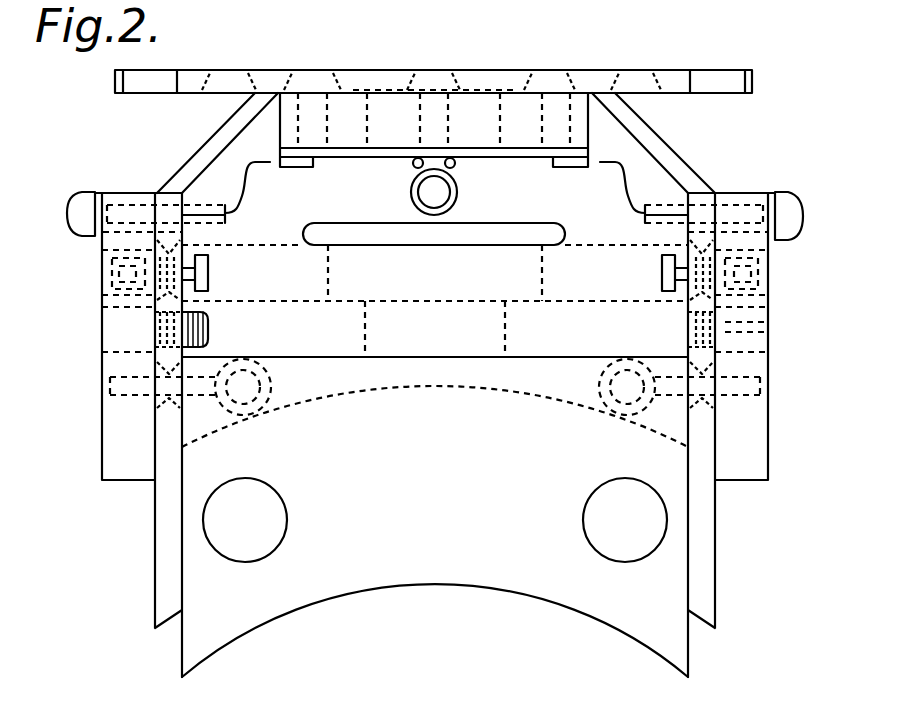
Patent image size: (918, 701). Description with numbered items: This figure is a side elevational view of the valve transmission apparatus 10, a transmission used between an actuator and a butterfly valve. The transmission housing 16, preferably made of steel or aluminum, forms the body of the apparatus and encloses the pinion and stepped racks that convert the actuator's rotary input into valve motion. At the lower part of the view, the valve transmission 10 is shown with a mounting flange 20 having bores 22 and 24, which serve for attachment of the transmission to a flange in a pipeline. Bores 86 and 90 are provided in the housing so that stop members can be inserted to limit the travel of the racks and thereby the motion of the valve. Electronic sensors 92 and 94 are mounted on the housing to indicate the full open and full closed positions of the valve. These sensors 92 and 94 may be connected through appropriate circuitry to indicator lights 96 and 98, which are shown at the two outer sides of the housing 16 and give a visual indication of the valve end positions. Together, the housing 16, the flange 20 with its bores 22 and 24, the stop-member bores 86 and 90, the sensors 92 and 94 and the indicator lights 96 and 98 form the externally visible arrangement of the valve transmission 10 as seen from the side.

The valve transmission apparatus 10 is at (779, 367).
The transmission housing 16 is at (212, 418).
The mounting flange 20 is at (463, 535).
The bore 22 is at (613, 523).
The bore 24 is at (250, 525).
The bore 86 is at (717, 326).
The bore 90 is at (200, 328).
The electronic sensor 92 is at (208, 264).
The electronic sensor 94 is at (661, 268).
The indicator light 96 is at (70, 212).
The indicator light 98 is at (800, 212).